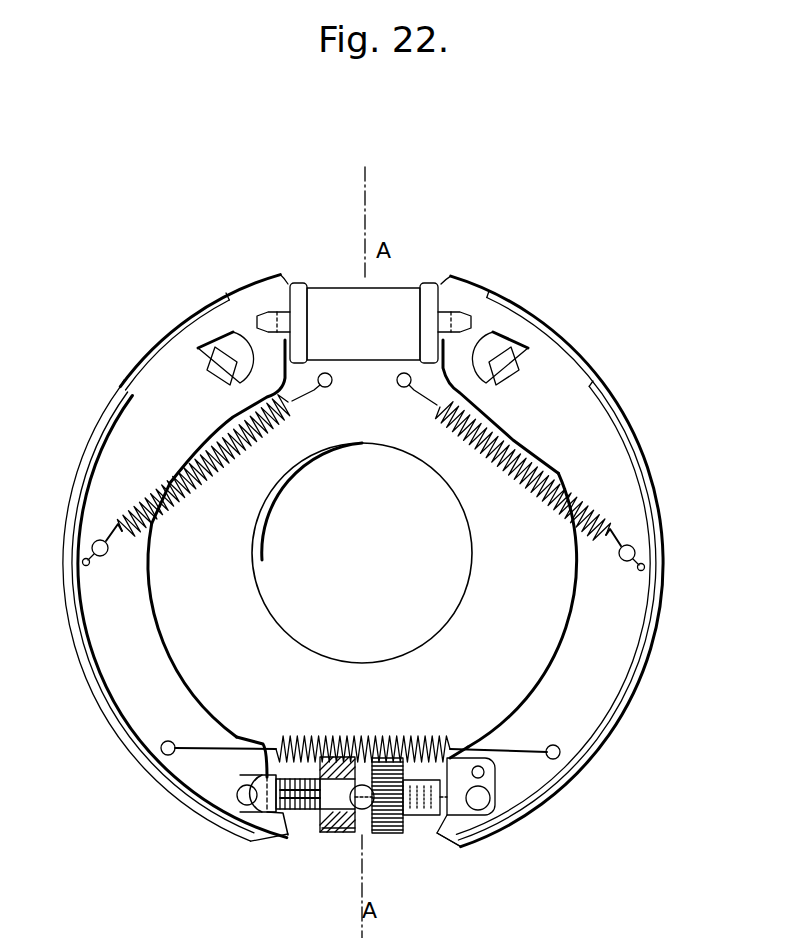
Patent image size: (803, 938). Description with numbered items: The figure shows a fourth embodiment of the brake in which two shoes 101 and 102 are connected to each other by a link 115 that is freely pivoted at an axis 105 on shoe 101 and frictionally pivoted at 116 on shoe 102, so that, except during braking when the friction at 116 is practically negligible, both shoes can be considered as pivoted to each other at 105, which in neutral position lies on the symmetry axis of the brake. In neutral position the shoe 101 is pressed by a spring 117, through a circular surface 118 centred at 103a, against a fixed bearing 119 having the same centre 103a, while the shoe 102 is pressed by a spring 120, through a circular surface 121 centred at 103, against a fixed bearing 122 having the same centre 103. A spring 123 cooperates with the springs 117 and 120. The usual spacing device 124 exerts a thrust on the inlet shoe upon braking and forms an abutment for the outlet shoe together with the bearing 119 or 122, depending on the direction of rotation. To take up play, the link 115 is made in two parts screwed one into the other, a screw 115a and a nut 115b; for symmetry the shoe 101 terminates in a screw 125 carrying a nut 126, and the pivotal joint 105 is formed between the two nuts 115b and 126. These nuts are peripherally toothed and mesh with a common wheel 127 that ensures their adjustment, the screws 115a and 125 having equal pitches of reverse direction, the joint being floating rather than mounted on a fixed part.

The shoe 101 is at (640, 632).
The shoe 102 is at (143, 629).
The centre 103 is at (276, 305).
The centre 103a is at (450, 302).
The axis 105 is at (365, 805).
The link 115 is at (262, 828).
The screw 115a is at (290, 832).
The nut 115b is at (332, 834).
The frictional pivot 116 is at (243, 797).
The spring 117 is at (530, 498).
The circular surface 118 is at (520, 351).
The fixed bearing 119 is at (508, 368).
The spring 120 is at (218, 470).
The circular surface 121 is at (203, 350).
The fixed bearing 122 is at (225, 366).
The spring 123 is at (318, 738).
The spacing device 124 is at (363, 340).
The screw 125 is at (462, 812).
The nut 126 is at (398, 833).
The wheel 127 is at (390, 738).